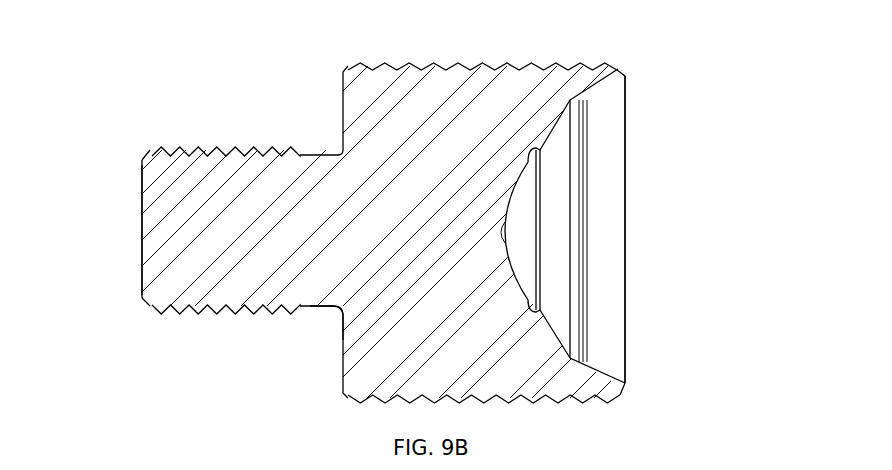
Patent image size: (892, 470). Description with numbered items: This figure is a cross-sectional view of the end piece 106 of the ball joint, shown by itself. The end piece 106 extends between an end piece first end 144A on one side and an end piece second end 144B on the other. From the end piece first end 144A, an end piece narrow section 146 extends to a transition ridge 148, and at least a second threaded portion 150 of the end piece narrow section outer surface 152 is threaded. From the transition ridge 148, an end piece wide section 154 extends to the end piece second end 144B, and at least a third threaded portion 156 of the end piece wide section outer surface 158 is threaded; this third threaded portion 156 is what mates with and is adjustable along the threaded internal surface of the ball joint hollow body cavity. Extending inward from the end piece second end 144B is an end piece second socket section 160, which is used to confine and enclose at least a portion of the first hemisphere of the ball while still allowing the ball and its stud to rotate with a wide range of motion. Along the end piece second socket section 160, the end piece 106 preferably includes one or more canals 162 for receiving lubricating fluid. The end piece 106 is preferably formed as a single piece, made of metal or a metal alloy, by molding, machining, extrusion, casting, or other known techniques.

The end piece 106 is at (243, 70).
The end piece first end 144A is at (141, 240).
The end piece second end 144B is at (623, 75).
The end piece narrow section 146 is at (217, 233).
The transition ridge 148 is at (345, 327).
The second threaded portion 150 is at (220, 313).
The end piece narrow section outer surface 152 is at (227, 150).
The end piece wide section 154 is at (430, 162).
The third threaded portion 156 is at (527, 65).
The end piece wide section outer surface 158 is at (462, 67).
The end piece second socket section 160 is at (555, 173).
The canals 162 is at (537, 197).